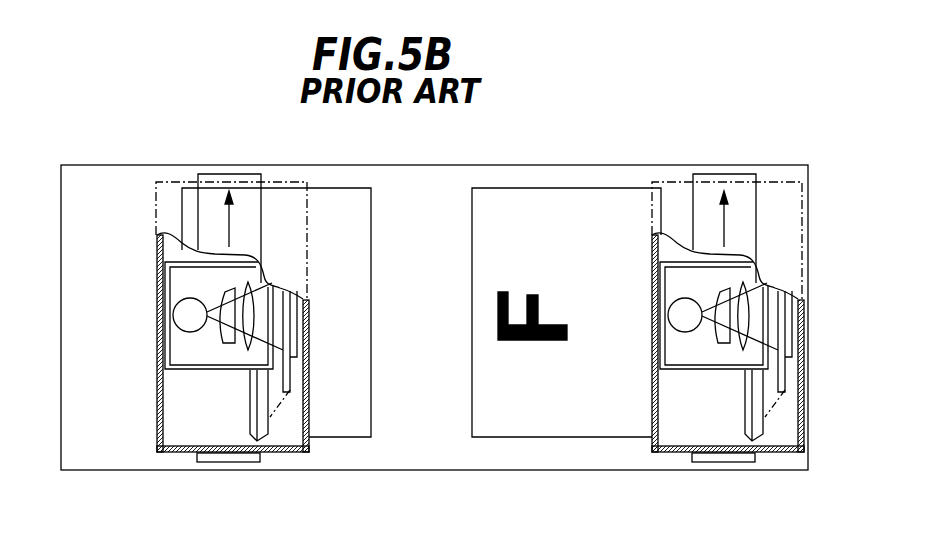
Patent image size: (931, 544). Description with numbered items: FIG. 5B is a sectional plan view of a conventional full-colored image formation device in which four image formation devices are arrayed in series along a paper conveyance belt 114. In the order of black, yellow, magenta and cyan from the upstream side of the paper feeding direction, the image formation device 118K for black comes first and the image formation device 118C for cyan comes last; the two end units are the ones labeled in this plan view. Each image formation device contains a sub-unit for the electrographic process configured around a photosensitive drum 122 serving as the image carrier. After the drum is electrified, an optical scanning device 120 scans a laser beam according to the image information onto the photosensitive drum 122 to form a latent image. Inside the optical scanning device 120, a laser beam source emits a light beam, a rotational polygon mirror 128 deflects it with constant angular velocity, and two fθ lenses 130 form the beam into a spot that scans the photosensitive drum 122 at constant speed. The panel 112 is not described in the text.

The display panel 112 is at (472, 306).
The paper conveyance belt 114 is at (787, 175).
The image formation device 118C is at (155, 444).
The image formation device 118K is at (650, 444).
The optical scanning device 120 is at (280, 455).
The photosensitive drum 122 is at (230, 176).
The rotational polygon mirror 128 is at (182, 321).
The fθ lenses 130 is at (230, 346).